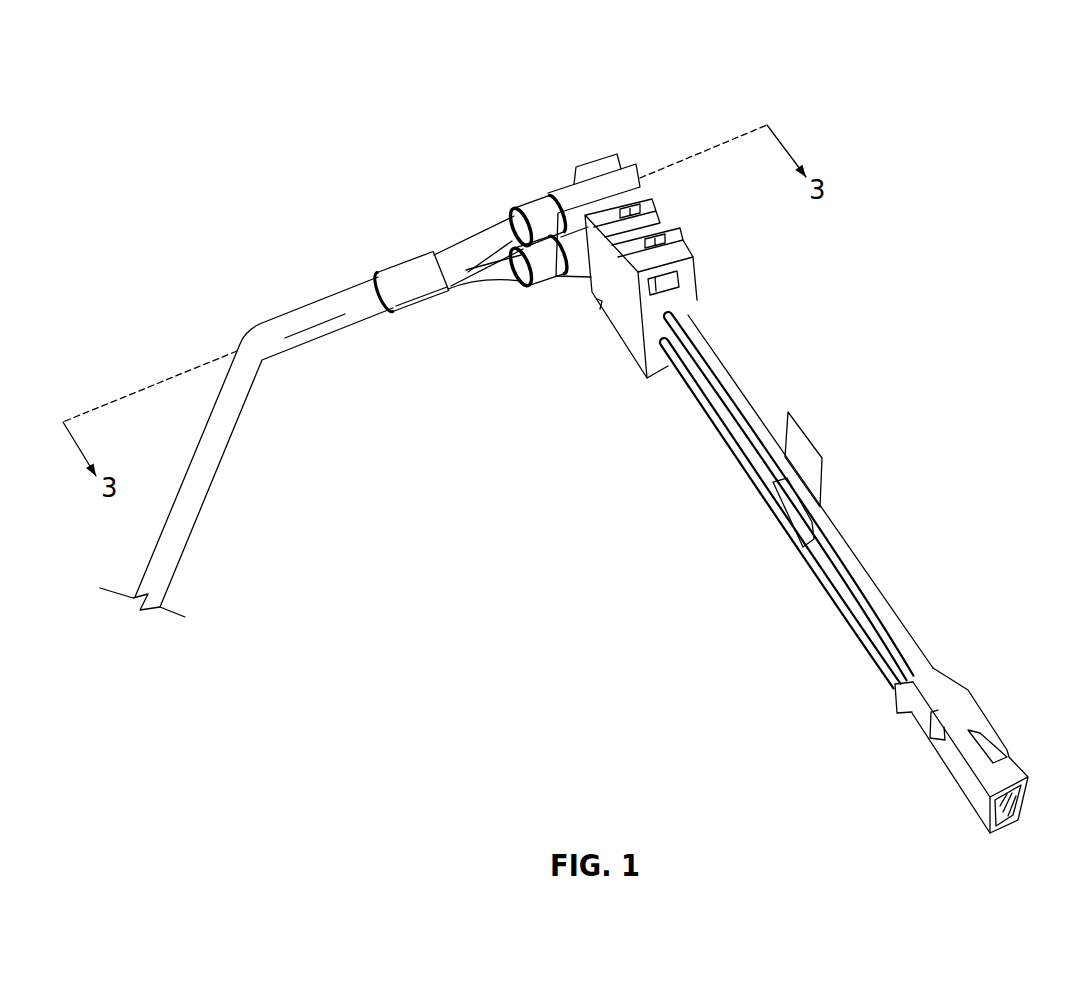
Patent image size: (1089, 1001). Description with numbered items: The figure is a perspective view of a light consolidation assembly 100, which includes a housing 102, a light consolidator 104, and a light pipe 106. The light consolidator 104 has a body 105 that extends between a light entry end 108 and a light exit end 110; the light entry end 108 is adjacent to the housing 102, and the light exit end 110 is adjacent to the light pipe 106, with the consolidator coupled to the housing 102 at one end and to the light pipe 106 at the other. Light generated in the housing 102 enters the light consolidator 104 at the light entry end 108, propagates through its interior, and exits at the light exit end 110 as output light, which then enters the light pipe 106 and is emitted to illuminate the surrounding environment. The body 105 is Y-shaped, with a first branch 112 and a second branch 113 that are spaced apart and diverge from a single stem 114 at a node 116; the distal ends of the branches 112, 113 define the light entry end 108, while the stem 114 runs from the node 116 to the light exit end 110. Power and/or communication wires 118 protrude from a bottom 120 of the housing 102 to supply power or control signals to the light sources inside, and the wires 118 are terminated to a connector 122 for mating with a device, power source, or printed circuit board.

The light consolidation assembly 100 is at (503, 61).
The housing 102 is at (632, 166).
The light consolidator 104 is at (468, 213).
The body 105 is at (432, 304).
The light pipe 106 is at (297, 318).
The light entry end 108 is at (512, 190).
The light exit end 110 is at (372, 252).
The first branch 112 is at (514, 290).
The second branch 113 is at (506, 232).
The stem 114 is at (394, 316).
The node 116 is at (458, 250).
The wires 118 is at (733, 434).
The bottom 120 is at (710, 325).
The connector 122 is at (990, 722).